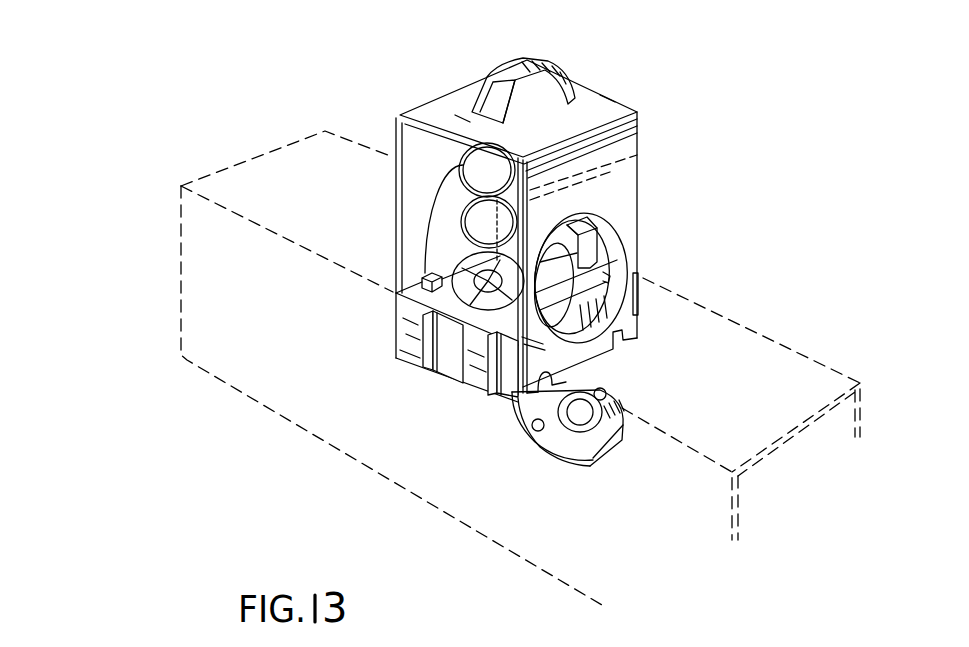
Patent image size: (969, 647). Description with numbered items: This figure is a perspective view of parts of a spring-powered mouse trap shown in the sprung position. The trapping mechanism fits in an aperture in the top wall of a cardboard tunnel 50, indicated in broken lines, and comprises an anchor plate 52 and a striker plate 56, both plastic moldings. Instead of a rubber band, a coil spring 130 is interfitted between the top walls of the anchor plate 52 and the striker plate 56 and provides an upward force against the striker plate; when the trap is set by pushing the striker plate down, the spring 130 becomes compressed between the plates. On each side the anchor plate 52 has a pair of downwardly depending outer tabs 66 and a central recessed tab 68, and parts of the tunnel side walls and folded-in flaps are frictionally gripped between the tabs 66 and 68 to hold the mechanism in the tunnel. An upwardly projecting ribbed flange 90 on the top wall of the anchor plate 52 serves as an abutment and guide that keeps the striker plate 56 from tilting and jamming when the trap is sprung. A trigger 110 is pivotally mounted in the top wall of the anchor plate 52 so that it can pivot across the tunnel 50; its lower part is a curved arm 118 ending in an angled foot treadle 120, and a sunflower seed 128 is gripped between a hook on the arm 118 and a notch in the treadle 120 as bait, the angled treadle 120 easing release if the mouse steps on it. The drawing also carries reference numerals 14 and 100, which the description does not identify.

The mounting panel 14 is at (392, 190).
The cardboard tunnel 50 is at (226, 318).
The anchor plate 52 is at (388, 322).
The striker plate 56 is at (397, 121).
The outer tabs 66 is at (413, 356).
The central recessed tab 68 is at (447, 371).
The ribbed flange 90 is at (638, 241).
The latch button 100 is at (487, 77).
The trigger 110 is at (460, 278).
The curved arm 118 is at (520, 411).
The angled foot treadle 120 is at (592, 438).
The sunflower seed 128 is at (606, 398).
The coil spring 130 is at (453, 226).